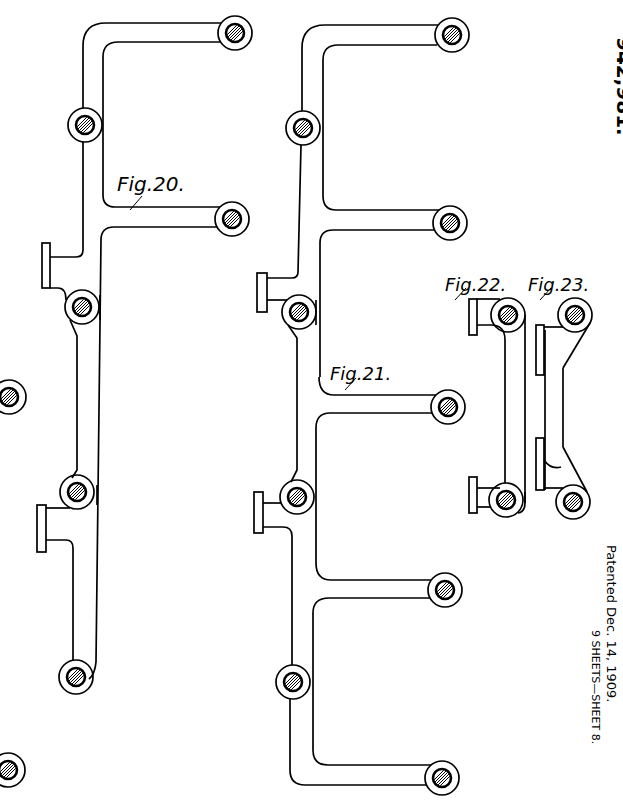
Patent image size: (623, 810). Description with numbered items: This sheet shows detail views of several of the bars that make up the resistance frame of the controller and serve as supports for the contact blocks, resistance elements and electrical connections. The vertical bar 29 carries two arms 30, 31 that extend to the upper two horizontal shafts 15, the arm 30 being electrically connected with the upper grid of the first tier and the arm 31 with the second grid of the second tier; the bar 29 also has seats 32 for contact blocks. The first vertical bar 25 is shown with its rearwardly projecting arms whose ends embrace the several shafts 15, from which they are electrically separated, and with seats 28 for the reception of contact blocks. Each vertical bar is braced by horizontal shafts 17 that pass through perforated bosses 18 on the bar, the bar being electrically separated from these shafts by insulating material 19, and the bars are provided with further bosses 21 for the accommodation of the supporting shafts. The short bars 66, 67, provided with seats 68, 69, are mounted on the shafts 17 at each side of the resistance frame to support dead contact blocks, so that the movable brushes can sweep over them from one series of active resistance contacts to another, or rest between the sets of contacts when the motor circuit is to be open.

In FIG. 20, the superimposed shafts 15 is at (233, 49).
In FIG. 21, the superimposed shafts 15 is at (454, 50).
In FIG. 20, the horizontal shafts 17 is at (74, 139).
In FIG. 21, the horizontal shafts 17 is at (299, 141).
In FIG. 22, the horizontal shafts 17 is at (500, 328).
In FIG. 23, the horizontal shafts 17 is at (560, 314).
In FIG. 20, the perforated bosses 18 is at (78, 323).
In FIG. 21, the perforated bosses 18 is at (320, 309).
In FIG. 22, the perforated bosses 18 is at (520, 504).
In FIG. 20, the insulating material 19 is at (97, 322).
In FIG. 21, the insulating material 19 is at (292, 317).
In FIG. 22, the insulating material 19 is at (496, 512).
In FIG. 21, the bosses 21 is at (322, 121).
In FIG. 21, the first vertical bar 25 is at (313, 186).
In FIG. 21, the seats 28 is at (258, 293).
In FIG. 20, the vertical bar 29 is at (92, 580).
In FIG. 20, the arm 30 is at (188, 36).
In FIG. 20, the arm 31 is at (178, 223).
In FIG. 20, the seats 32 is at (42, 263).
In FIG. 22, the short bar 66 is at (505, 397).
In FIG. 23, the short bar 67 is at (572, 416).
In FIG. 22, the seats 68 is at (469, 322).
In FIG. 23, the seats 69 is at (570, 367).